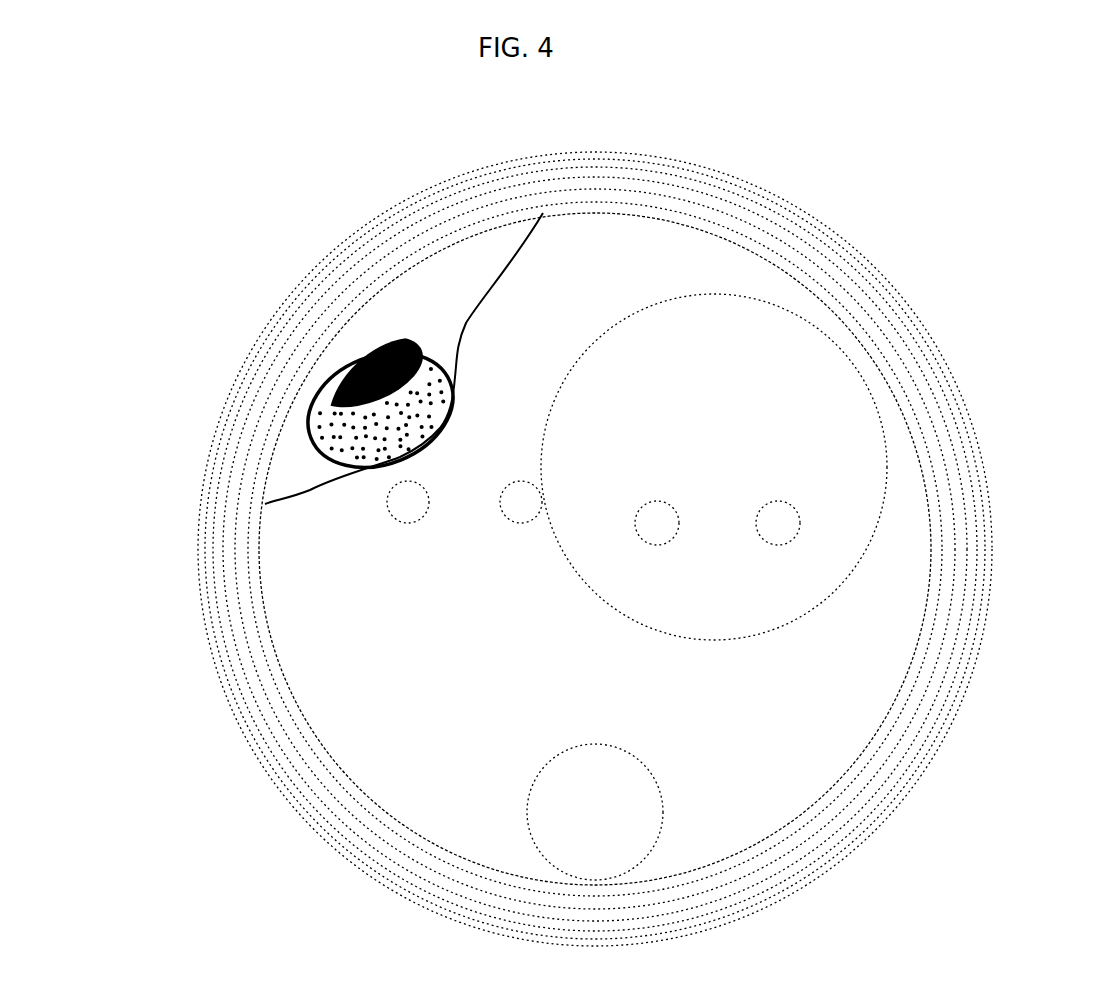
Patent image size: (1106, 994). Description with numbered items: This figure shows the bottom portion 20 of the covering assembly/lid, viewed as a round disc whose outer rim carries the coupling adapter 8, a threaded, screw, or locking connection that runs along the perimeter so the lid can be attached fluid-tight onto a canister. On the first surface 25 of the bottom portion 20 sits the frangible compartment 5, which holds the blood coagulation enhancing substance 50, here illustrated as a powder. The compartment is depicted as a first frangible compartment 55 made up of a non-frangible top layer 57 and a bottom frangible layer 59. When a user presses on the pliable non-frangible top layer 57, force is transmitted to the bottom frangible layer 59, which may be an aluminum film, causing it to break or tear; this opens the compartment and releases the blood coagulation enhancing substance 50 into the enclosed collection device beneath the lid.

The bottom portion 20 is at (942, 186).
The coupling adapter 8 is at (605, 173).
The first surface 25 is at (362, 600).
The frangible compartment 5 is at (271, 314).
The blood coagulation enhancing substance 50 is at (318, 412).
The first frangible compartment 55 is at (308, 428).
The non-frangible top layer 57 is at (358, 360).
The bottom frangible layer 59 is at (352, 465).